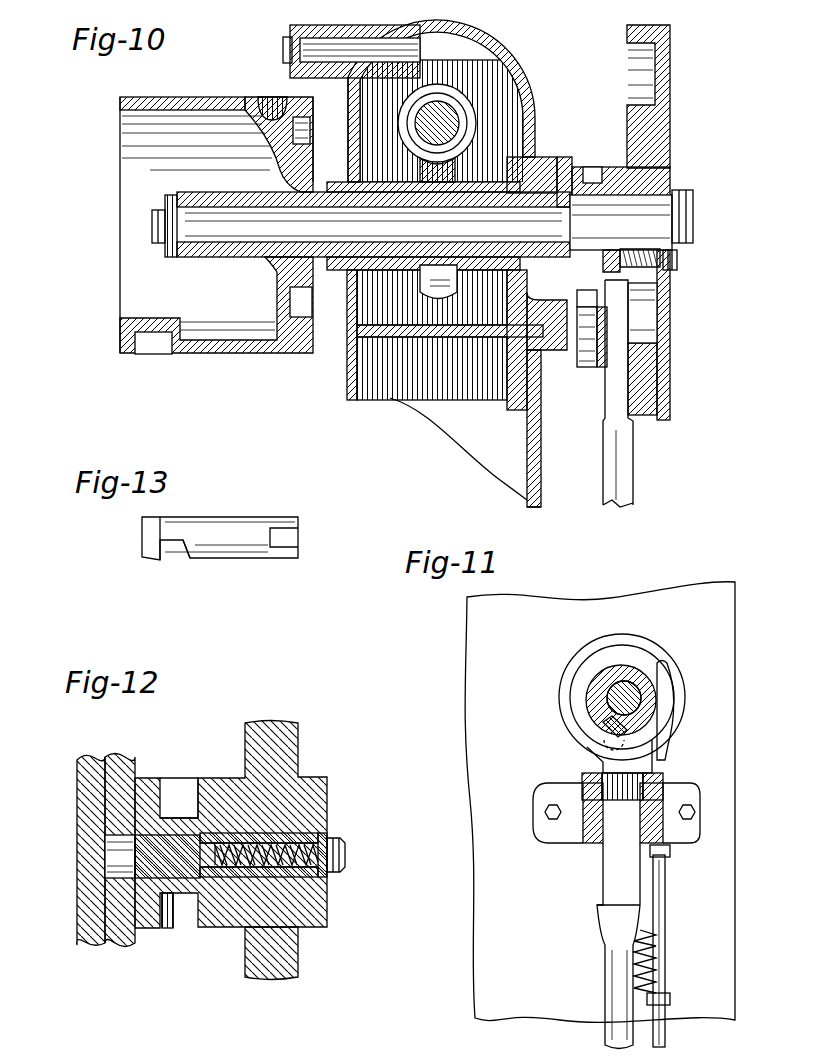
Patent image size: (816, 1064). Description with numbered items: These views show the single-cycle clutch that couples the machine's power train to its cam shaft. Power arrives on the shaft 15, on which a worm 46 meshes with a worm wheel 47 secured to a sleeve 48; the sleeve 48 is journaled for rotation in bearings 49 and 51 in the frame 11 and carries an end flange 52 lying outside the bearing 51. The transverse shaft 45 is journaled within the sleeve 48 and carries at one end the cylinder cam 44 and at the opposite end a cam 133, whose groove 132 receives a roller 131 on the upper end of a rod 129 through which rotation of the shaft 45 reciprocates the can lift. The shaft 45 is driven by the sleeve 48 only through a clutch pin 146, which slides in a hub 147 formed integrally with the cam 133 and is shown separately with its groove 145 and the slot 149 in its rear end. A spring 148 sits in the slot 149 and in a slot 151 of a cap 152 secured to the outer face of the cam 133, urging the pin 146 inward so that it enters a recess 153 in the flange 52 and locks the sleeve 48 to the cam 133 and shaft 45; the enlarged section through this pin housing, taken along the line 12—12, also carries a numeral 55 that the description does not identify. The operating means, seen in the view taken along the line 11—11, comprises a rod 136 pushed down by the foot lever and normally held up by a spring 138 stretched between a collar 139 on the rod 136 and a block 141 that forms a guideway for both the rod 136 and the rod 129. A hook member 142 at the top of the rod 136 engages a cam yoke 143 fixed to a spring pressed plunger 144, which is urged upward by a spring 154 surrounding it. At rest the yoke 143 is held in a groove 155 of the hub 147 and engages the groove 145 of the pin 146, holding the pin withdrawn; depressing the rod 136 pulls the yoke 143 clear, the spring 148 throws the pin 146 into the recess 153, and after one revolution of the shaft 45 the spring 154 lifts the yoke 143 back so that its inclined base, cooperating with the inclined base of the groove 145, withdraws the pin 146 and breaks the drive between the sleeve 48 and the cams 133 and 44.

In FIG. 10, the cylinder cam 44 is at (243, 355).
In FIG. 10, the transverse shaft 45 is at (222, 220).
In FIG. 11, the transverse shaft 45 is at (617, 690).
In FIG. 10, the worm 46 is at (450, 112).
In FIG. 10, the shaft 15 is at (460, 135).
In FIG. 10, the worm wheel 47 is at (497, 150).
In FIG. 10, the sleeve 48 is at (515, 160).
In FIG. 10, the bearing 49 is at (333, 185).
In FIG. 10, the frame 11 is at (620, 122).
In FIG. 10, the section line 12— 12 is at (715, 270).
In FIG. 10, the bearing 51 is at (562, 160).
In FIG. 12, the bearing 51 is at (90, 802).
In FIG. 10, the end flange 52 is at (596, 175).
In FIG. 12, the end flange 52 is at (112, 773).
In FIG. 10, the groove 132 is at (650, 90).
In FIG. 10, the cam 133 is at (662, 135).
In FIG. 12, the cam 133 is at (278, 948).
In FIG. 10, the groove 155 is at (660, 178).
In FIG. 10, the cam yoke 143 is at (610, 243).
In FIG. 12, the cam yoke 143 is at (167, 928).
In FIG. 11, the cam yoke 143 is at (617, 755).
In FIG. 10, the spring 148 is at (670, 255).
In FIG. 12, the spring 148 is at (335, 835).
In FIG. 10, the cap 152 is at (668, 270).
In FIG. 12, the cap 152 is at (347, 855).
In FIG. 10, the roller 131 is at (642, 322).
In FIG. 10, the recess 153 is at (560, 262).
In FIG. 12, the recess 153 is at (130, 850).
In FIG. 10, the spring 154 is at (527, 383).
In FIG. 10, the spring pressed plunger 144 is at (582, 348).
In FIG. 10, the rod 129 is at (618, 468).
In FIG. 11, the rod 129 is at (615, 985).
In FIG. 13, the clutch pin 146 is at (238, 528).
In FIG. 12, the clutch pin 146 is at (210, 900).
In FIG. 11, the clutch pin 146 is at (612, 722).
In FIG. 13, the groove 145 is at (174, 545).
In FIG. 11, the groove 145 is at (588, 728).
In FIG. 12, the slot 55 is at (172, 796).
In FIG. 12, the hub 147 is at (212, 790).
In FIG. 11, the hub 147 is at (638, 678).
In FIG. 12, the slot 149 is at (250, 850).
In FIG. 12, the slot 151 is at (323, 838).
In FIG. 11, the hook member 142 is at (660, 757).
In FIG. 11, the block 141 is at (582, 846).
In FIG. 11, the rod 136 is at (658, 927).
In FIG. 11, the spring 138 is at (648, 963).
In FIG. 11, the collar 139 is at (670, 998).